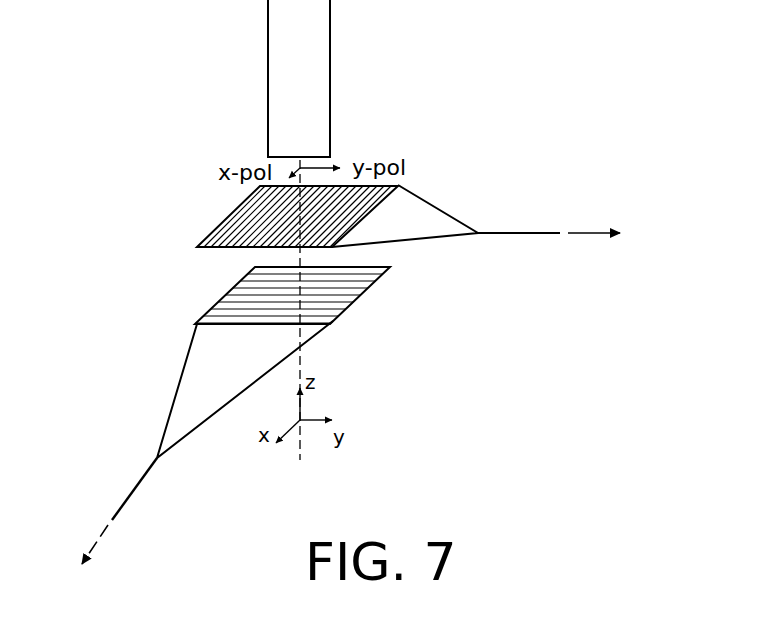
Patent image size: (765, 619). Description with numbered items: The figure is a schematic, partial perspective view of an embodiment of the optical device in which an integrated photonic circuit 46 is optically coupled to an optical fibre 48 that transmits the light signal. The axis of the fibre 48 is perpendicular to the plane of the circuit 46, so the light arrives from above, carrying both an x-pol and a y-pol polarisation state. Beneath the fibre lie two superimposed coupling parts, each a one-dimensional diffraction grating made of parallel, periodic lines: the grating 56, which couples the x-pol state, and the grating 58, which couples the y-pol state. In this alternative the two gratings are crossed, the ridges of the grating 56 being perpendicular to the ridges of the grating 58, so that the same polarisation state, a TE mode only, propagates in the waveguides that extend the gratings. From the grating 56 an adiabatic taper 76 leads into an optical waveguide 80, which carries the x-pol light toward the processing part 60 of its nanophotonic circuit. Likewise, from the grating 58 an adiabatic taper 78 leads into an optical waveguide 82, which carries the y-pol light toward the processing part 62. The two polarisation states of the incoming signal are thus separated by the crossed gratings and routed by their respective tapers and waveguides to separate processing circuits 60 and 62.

The optical fibre 48 is at (288, 80).
The integrated photonic circuit 46 is at (258, 248).
The coupling part 56 is at (235, 222).
The coupling part 58 is at (237, 302).
The adiabatic taper 76 is at (418, 212).
The optical waveguide 80 is at (505, 232).
The processing part 60 is at (625, 235).
The adiabatic taper 78 is at (200, 380).
The optical waveguide 82 is at (130, 490).
The processing part 62 is at (78, 563).